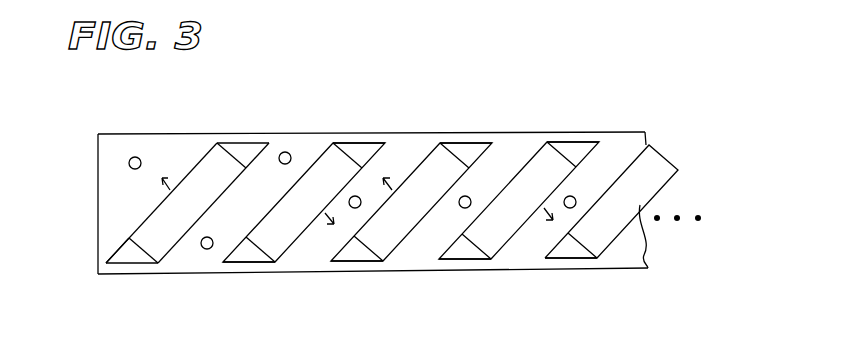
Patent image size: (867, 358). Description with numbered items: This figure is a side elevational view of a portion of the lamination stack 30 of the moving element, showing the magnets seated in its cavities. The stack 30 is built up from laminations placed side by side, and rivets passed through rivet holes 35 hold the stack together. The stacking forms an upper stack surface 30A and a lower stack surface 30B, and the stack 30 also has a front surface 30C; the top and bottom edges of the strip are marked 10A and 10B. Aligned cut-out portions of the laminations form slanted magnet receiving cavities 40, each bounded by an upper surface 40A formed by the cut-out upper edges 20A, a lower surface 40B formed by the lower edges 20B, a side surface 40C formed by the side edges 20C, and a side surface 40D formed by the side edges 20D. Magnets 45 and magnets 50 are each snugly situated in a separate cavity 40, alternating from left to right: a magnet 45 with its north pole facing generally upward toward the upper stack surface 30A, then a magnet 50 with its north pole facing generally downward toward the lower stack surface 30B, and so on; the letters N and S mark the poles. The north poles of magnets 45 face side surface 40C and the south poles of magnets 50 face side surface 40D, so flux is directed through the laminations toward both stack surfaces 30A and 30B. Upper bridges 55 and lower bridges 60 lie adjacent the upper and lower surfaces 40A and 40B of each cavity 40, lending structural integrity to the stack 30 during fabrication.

The top surface of strip 10A is at (158, 134).
The bottom surface of strip 10B is at (122, 275).
The cut-out portion upper edge 20A is at (225, 141).
The cut-out portion lower edge 20B is at (137, 265).
The cut-out portion side edge 20C is at (150, 220).
The cut-out portion side edge 20D is at (222, 218).
The lamination stack 30 is at (118, 197).
The upper stack surface 30A is at (378, 137).
The lower stack surface 30B is at (367, 272).
The front surface 30C is at (517, 250).
The rivet hole 35 is at (129, 163).
The magnet receiving cavity 40 is at (120, 262).
The upper surface 40A is at (268, 141).
The lower surface 40B is at (160, 265).
The side surface 40C is at (120, 265).
The side surface 40D is at (258, 142).
The magnet 45 is at (212, 168).
The magnet 50 is at (323, 140).
The upper bridge 55 is at (350, 139).
The lower bridge 60 is at (120, 268).